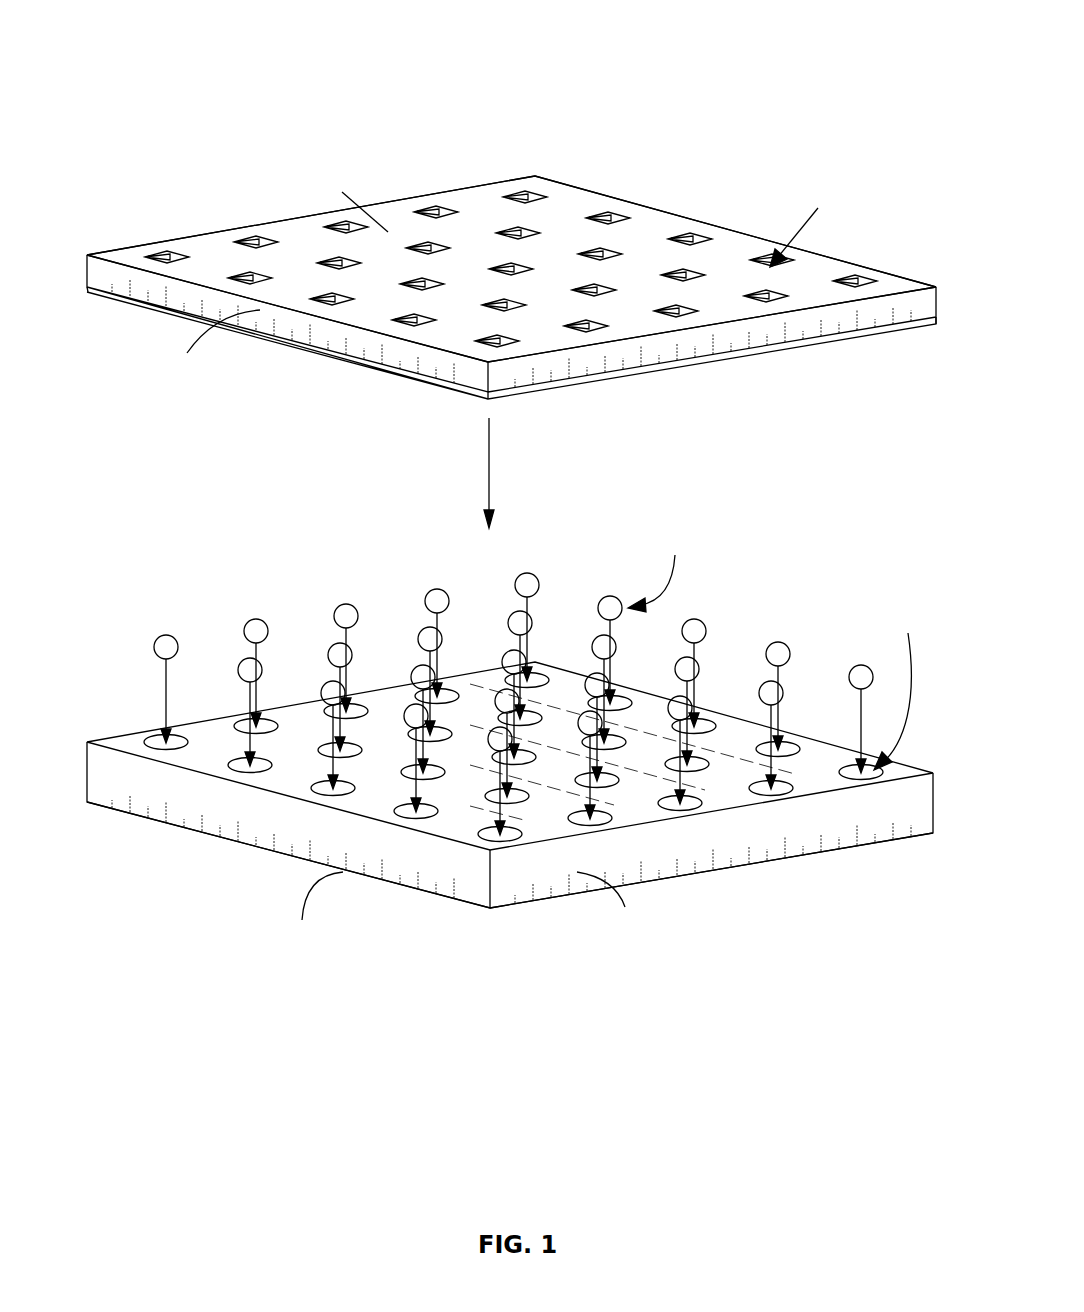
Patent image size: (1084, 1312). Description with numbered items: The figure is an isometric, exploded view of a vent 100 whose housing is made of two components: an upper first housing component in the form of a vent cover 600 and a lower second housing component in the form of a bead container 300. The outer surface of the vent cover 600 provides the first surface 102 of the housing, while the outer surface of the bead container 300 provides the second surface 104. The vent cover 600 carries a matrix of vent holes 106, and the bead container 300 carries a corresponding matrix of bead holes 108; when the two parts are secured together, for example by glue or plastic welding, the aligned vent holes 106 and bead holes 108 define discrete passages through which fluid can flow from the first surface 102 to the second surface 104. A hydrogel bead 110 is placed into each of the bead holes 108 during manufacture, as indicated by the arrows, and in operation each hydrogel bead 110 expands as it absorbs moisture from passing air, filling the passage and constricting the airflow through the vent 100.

The vent 100 is at (768, 68).
The first surface 102 is at (317, 158).
The second surface 104 is at (288, 955).
The vent holes 106 is at (838, 173).
The bead holes 108 is at (907, 597).
The hydrogel bead 110 is at (687, 522).
The bead container 300 is at (643, 945).
The vent cover 600 is at (163, 388).